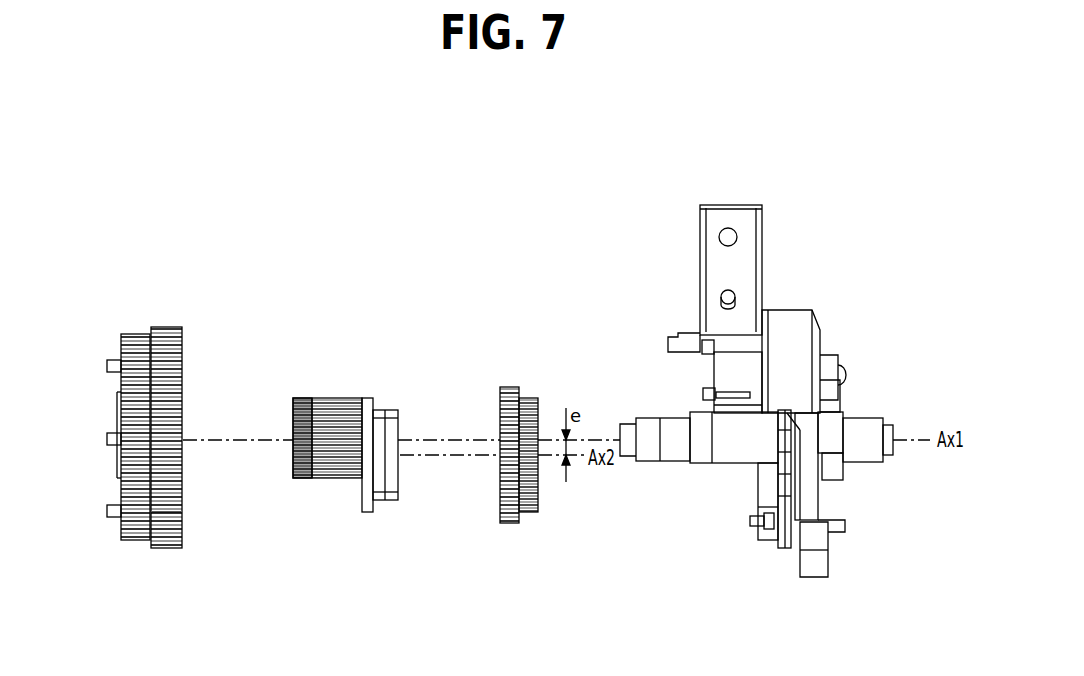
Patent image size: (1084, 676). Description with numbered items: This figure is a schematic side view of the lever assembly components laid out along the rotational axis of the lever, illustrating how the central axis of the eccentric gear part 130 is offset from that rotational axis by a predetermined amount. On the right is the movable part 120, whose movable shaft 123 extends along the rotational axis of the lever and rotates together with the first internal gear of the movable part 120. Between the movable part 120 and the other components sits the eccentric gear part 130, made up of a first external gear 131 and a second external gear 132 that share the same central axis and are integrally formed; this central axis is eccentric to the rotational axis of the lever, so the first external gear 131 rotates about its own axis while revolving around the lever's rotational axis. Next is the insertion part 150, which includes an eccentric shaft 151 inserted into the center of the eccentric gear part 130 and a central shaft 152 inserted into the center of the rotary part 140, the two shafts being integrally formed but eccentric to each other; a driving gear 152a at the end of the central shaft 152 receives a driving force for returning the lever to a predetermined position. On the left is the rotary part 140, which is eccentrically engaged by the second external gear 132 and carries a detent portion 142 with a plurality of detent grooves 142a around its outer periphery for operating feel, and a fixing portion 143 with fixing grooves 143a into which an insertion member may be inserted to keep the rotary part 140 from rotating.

The movable part 120 is at (790, 318).
The movable shaft 123 is at (732, 467).
The eccentric gear part 130 is at (520, 507).
The first external gear 131 is at (530, 516).
The second external gear 132 is at (510, 528).
The rotary part 140 is at (151, 487).
The detent portion 142 is at (172, 552).
The detent grooves 142a is at (175, 519).
The fixing portion 143 is at (136, 548).
The fixing grooves 143a is at (121, 529).
The insertion part 150 is at (340, 503).
The eccentric shaft 151 is at (388, 500).
The central shaft 152 is at (343, 490).
The driving gear 152a is at (300, 485).